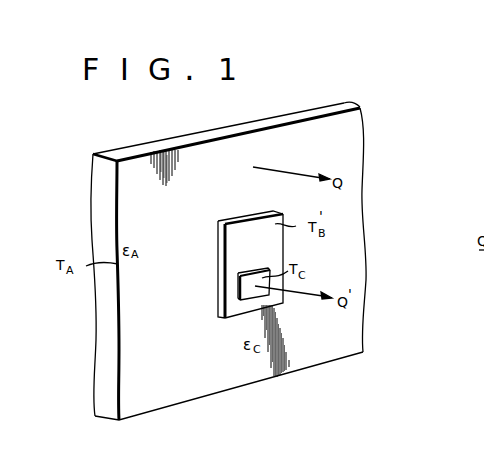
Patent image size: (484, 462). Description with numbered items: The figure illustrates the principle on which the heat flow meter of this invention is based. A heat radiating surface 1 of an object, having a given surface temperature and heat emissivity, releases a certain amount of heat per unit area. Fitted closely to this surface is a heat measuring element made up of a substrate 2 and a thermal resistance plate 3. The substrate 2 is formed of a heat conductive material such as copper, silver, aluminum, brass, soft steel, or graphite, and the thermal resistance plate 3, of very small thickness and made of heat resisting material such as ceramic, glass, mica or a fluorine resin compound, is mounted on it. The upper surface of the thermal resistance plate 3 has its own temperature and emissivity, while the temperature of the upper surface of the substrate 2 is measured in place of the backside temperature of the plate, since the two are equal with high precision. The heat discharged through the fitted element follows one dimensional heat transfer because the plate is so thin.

The heat radiating surface 1 is at (139, 170).
The substrate 2 is at (225, 275).
The thermal resistance plate 3 is at (247, 296).